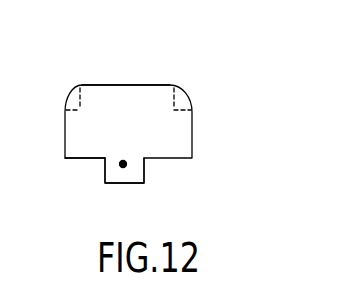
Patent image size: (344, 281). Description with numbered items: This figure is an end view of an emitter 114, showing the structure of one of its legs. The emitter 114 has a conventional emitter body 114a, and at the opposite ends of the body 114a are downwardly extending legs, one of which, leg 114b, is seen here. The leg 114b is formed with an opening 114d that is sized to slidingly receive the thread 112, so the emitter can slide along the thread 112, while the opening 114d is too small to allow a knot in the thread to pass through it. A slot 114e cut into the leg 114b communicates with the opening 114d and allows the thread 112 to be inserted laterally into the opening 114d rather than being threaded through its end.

The emitter 114 is at (138, 67).
The emitter body 114a is at (65, 130).
The leg 114b is at (105, 172).
The opening 114d is at (124, 162).
The slot 114e is at (123, 166).
The thread 112 is at (145, 164).